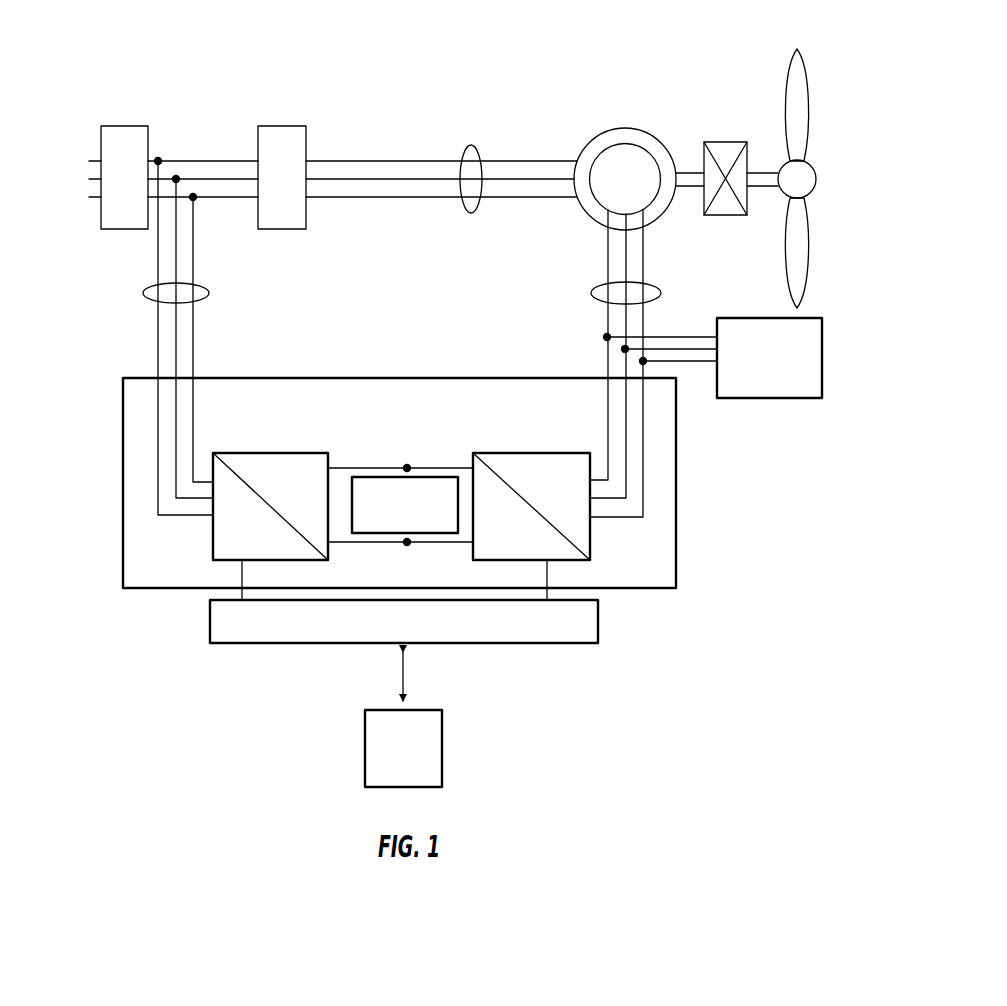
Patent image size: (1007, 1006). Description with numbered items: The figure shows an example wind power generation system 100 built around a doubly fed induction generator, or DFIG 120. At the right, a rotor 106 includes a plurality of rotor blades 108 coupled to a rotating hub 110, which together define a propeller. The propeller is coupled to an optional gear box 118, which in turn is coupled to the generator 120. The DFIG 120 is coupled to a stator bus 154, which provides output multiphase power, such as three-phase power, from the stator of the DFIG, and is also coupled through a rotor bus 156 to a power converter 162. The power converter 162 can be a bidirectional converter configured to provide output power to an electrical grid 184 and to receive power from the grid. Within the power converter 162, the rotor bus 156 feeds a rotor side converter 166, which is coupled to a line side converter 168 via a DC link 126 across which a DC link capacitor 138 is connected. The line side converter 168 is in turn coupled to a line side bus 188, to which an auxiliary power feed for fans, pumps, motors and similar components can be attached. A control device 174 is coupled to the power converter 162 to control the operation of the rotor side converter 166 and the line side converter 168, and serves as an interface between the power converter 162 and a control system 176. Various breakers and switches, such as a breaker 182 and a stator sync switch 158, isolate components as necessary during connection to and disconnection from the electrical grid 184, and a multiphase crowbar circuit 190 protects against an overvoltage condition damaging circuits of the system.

The wind power generation system 100 is at (678, 31).
The rotor 106 is at (844, 79).
The rotor blades 108 is at (806, 116).
The rotating hub 110 is at (817, 179).
The gear box 118 is at (723, 142).
The doubly fed induction generator (DFIG) 120 is at (633, 128).
The DC link 126 is at (367, 467).
The DC link capacitor 138 is at (437, 476).
The stator bus 154 is at (472, 147).
The rotor bus 156 is at (591, 297).
The stator sync switch 158 is at (280, 126).
The power converter 162 is at (677, 462).
The rotor side converter 166 is at (507, 452).
The line side converter 168 is at (272, 452).
The control device 174 is at (545, 645).
The control system 176 is at (443, 752).
The breaker 182 is at (118, 126).
The electrical grid 184 is at (79, 165).
The line side bus 188 is at (209, 298).
The multiphase crowbar circuit 190 is at (822, 355).